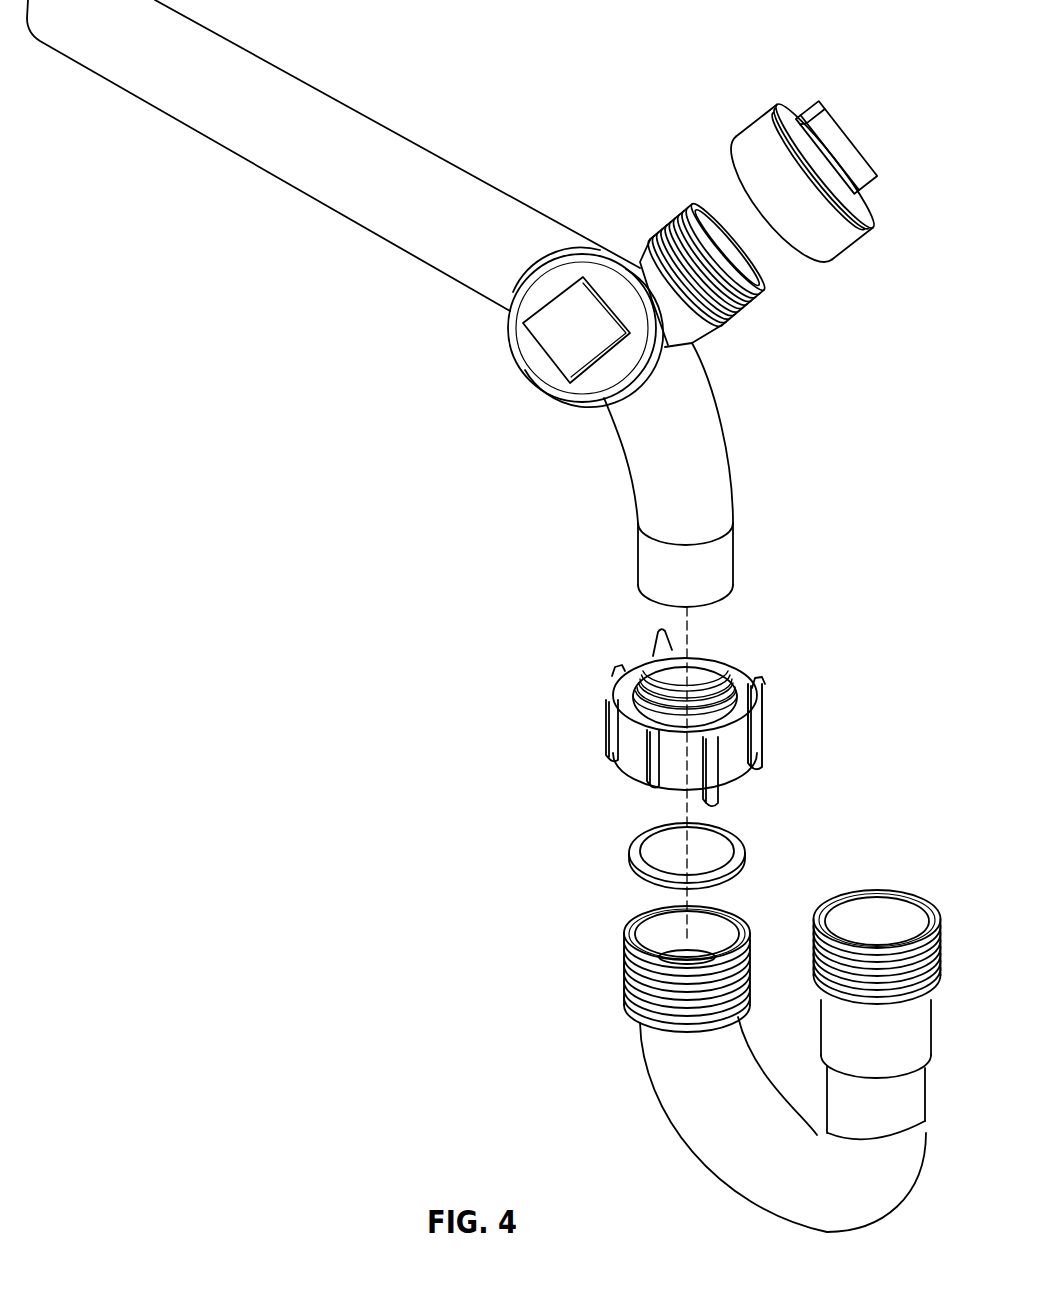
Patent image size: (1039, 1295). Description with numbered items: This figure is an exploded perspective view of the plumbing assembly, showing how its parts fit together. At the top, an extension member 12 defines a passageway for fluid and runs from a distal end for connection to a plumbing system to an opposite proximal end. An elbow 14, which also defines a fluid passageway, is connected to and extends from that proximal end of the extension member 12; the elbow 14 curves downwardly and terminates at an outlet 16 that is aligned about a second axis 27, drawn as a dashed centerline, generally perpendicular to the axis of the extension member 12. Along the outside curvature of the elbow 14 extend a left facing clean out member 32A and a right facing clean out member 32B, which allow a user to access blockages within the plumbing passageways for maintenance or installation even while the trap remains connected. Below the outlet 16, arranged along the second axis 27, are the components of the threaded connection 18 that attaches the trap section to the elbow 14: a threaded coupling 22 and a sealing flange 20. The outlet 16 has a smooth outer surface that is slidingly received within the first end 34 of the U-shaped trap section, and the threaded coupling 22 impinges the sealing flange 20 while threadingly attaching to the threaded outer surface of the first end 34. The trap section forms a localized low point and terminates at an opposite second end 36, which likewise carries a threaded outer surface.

The extension member 12 is at (305, 95).
The elbow 14 is at (724, 437).
The outlet 16 is at (648, 600).
The threaded connection 18 is at (579, 751).
The sealing flange 20 is at (630, 850).
The threaded coupling 22 is at (764, 712).
The second axis 27 is at (690, 624).
The left facing clean out member 32A is at (491, 360).
The right facing clean out member 32B is at (657, 198).
The first end 34 is at (607, 969).
The second end 36 is at (896, 869).